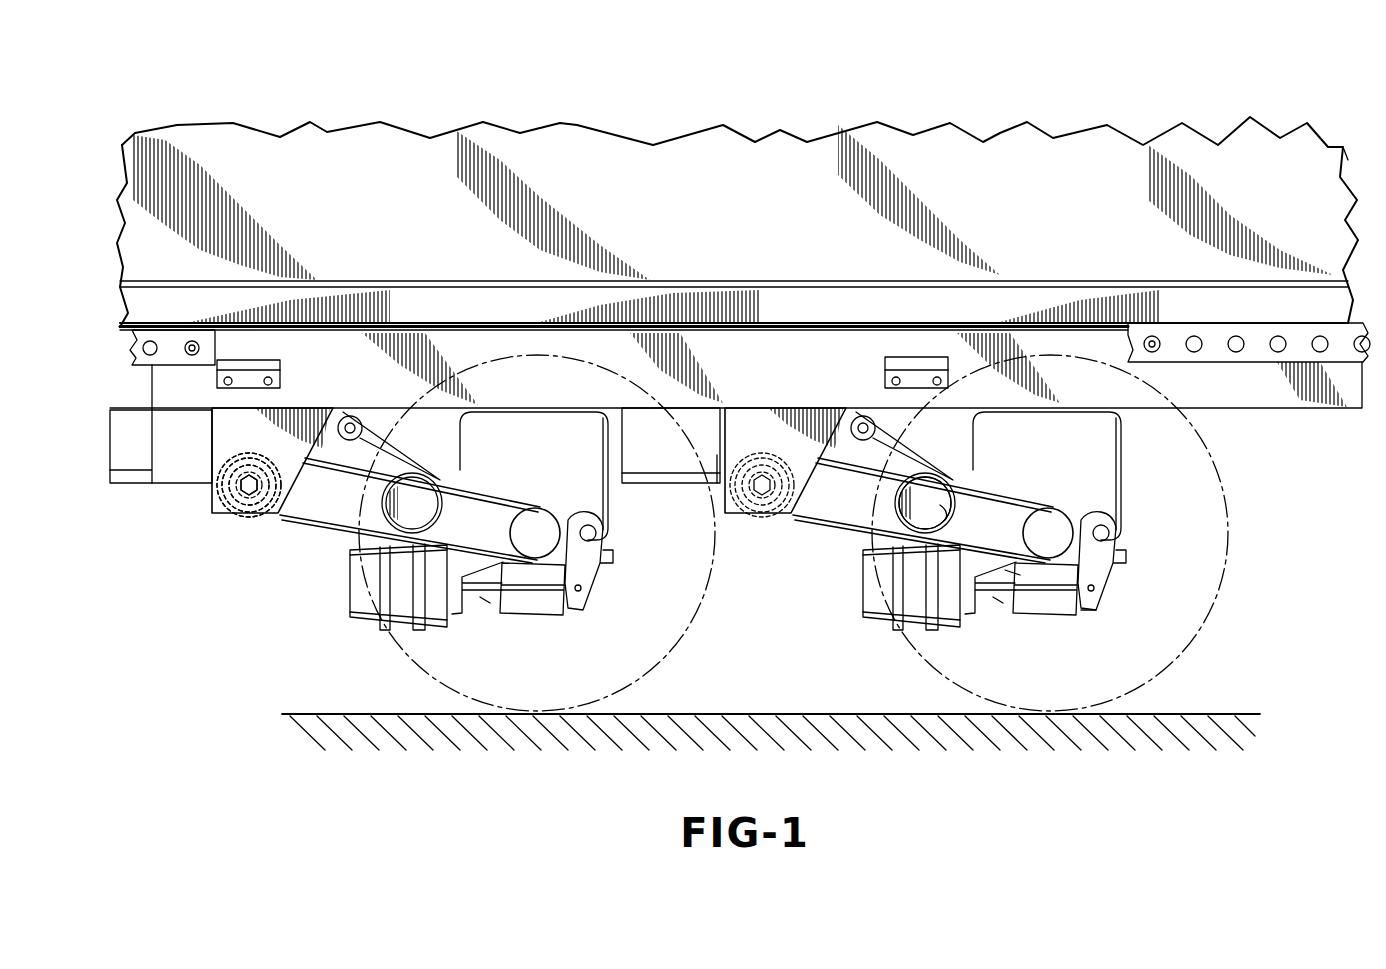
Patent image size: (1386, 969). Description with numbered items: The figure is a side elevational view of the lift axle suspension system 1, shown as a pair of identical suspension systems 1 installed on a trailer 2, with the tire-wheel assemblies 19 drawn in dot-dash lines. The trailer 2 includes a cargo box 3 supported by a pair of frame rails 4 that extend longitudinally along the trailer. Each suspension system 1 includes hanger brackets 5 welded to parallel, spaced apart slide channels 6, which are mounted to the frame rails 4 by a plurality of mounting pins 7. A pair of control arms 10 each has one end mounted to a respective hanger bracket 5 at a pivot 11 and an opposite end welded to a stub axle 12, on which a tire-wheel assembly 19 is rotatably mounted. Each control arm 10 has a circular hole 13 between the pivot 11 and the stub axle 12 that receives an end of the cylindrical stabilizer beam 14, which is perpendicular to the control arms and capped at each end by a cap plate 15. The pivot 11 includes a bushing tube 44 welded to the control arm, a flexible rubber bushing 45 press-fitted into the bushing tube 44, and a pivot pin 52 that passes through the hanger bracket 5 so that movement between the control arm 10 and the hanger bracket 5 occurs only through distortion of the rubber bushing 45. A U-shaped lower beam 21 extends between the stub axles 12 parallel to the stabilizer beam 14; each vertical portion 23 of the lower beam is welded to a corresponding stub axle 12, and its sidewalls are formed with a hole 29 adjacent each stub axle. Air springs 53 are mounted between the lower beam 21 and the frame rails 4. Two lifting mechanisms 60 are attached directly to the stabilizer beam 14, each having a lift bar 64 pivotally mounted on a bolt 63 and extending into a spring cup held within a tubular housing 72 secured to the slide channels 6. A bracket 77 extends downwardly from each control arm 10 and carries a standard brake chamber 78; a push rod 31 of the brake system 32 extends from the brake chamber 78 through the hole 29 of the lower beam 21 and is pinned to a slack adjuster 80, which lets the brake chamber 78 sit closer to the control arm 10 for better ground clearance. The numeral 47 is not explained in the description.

The suspension system 1 is at (320, 611).
The trailer 2 is at (1283, 104).
The cargo box 3 is at (1308, 155).
The frame rails 4 is at (1215, 352).
The hanger brackets 5 is at (228, 432).
The slide channels 6 is at (178, 385).
The mounting pins 7 is at (193, 352).
The control arms 10 is at (486, 492).
The pivot 11 is at (240, 513).
The stub axle 12 is at (1068, 514).
The circular hole 13 is at (943, 512).
The stabilizer beam 14 is at (940, 476).
The cap plate 15 is at (938, 497).
The tire-wheel assembly 19 is at (664, 662).
The lower beam 21 is at (558, 614).
The vertical portion 23 is at (1058, 572).
The hole 29 is at (1010, 573).
The push rod 31 is at (483, 596).
The brake system 32 is at (1090, 609).
The bushing tube 44 is at (232, 508).
The rubber bushing 45 is at (233, 471).
The elastomeric bushing 47 is at (220, 497).
The pivot pin 52 is at (264, 494).
The air springs 53 is at (480, 440).
The lifting mechanisms 60 is at (126, 396).
The bolt 63 is at (352, 418).
The lift bar 64 is at (325, 406).
The tubular housing 72 is at (137, 468).
The bracket 77 is at (461, 618).
The brake chamber 78 is at (362, 619).
The slack adjuster 80 is at (1100, 563).